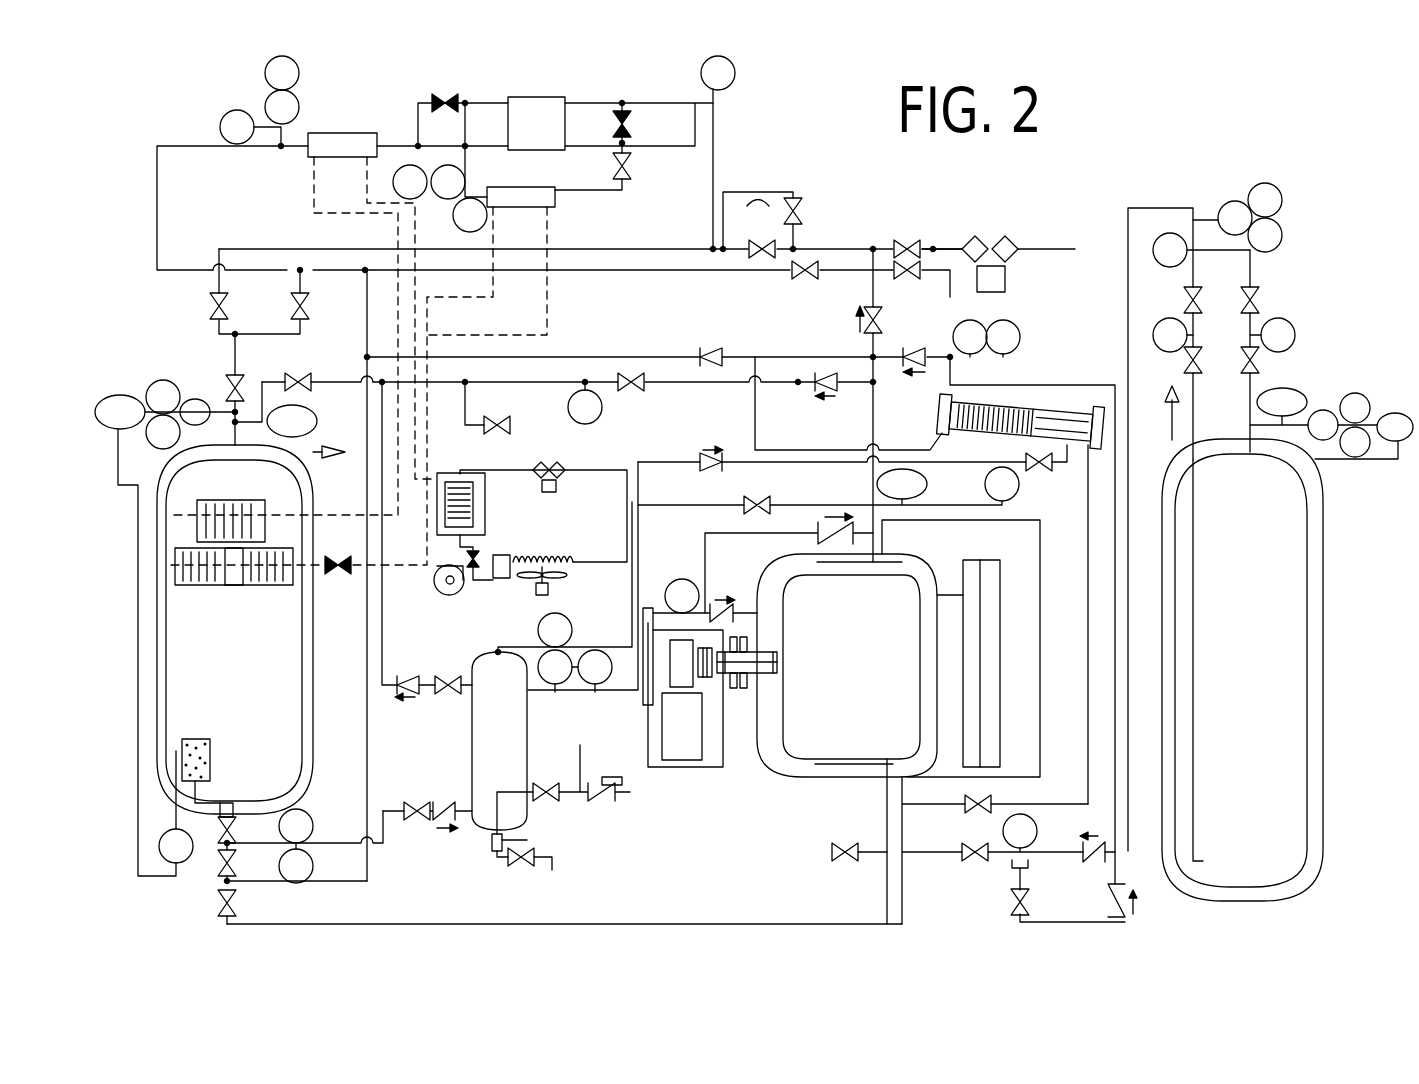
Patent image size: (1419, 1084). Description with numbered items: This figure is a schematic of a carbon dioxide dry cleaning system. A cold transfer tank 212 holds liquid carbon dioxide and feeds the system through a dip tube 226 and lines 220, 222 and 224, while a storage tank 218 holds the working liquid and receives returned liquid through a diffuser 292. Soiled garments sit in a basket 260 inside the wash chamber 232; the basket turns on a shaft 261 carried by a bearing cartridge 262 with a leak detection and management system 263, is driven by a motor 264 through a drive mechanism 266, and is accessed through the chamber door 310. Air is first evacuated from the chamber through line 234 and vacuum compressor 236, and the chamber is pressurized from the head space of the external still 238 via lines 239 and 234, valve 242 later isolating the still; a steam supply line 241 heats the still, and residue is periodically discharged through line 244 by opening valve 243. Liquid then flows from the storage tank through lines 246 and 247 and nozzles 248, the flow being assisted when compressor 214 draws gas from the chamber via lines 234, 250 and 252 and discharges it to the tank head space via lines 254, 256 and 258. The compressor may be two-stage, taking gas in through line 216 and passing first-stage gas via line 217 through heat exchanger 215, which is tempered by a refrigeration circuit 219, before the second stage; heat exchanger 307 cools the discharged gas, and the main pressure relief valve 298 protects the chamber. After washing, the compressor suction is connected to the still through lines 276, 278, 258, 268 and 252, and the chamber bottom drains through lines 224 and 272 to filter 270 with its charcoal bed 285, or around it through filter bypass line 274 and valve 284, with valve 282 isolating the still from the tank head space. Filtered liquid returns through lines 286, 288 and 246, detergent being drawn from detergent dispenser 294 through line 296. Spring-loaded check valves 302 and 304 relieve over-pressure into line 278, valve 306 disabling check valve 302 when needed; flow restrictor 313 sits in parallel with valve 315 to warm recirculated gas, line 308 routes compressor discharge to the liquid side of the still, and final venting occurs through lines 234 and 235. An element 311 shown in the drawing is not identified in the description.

The cold transfer tank 212 is at (1323, 641).
The compressor 214 is at (530, 97).
The heat exchanger 215 is at (558, 206).
The line 216 is at (597, 103).
The line 217 is at (465, 197).
The storage tank 218 is at (157, 646).
The refrigeration circuit 219 is at (622, 452).
The line 220 is at (1252, 266).
The line 222 is at (1148, 207).
The line 224 is at (885, 797).
The dip tube 226 is at (1196, 770).
The wash chamber 232 is at (800, 778).
The line 234 is at (868, 340).
The line 235 is at (933, 249).
The vacuum compressor 236 is at (1016, 262).
The external still 238 is at (470, 732).
The line 239 is at (590, 576).
The steam supply line 241 is at (580, 755).
The valve 242 is at (772, 501).
The valve 243 is at (540, 855).
The line 244 is at (495, 853).
The line 246 is at (611, 924).
The line 247 is at (1040, 632).
The nozzles 248 is at (898, 576).
The line 250 is at (808, 248).
The line 252 is at (714, 143).
The line 254 is at (157, 232).
The line 256 is at (300, 270).
The line 258 is at (227, 378).
The basket 260 is at (917, 563).
The shaft 261 is at (790, 649).
The bearing cartridge 262 is at (740, 688).
The leak detection and management system 263 is at (640, 632).
The motor 264 is at (662, 748).
The drive mechanism 266 is at (672, 640).
The line 268 is at (245, 249).
The filter 270 is at (1018, 403).
The line 272 is at (1085, 527).
The filter bypass line 274 is at (639, 461).
The line 276 is at (384, 642).
The line 278 is at (345, 379).
The valve 282 is at (465, 680).
The valve 284 is at (1026, 458).
The charcoal bed 285 is at (1003, 407).
The line 286 is at (753, 405).
The line 288 is at (370, 777).
The diffuser 292 is at (206, 740).
The detergent dispenser 294 is at (1011, 892).
The line 296 is at (1106, 866).
The main pressure relief valve 298 is at (893, 270).
The spring-loaded check valve 302 is at (798, 380).
The spring-loaded check valve 304 is at (950, 371).
The valve 306 is at (631, 357).
The heat exchanger 307 is at (340, 133).
The line 308 is at (385, 813).
The chamber door 310 is at (1002, 722).
The heater element 311 is at (178, 504).
The flow restrictor 313 is at (752, 188).
The valve 315 is at (750, 266).